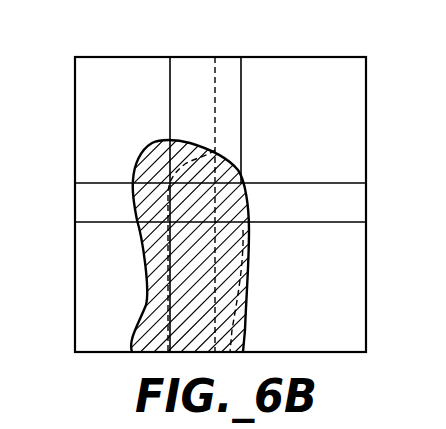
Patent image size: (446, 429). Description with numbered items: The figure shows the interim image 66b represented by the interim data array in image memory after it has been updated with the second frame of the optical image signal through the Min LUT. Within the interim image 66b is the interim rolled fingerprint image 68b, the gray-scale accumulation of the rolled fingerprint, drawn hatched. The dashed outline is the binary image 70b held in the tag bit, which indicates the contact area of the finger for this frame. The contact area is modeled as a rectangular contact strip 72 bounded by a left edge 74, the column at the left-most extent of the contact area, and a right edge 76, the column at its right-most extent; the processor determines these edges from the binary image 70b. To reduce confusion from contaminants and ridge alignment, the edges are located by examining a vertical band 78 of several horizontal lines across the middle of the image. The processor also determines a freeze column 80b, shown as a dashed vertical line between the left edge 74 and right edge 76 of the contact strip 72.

The interim image 66b is at (323, 70).
The contact strip 72 is at (181, 185).
The left edge 74 is at (168, 107).
The right edge 76 is at (243, 90).
The vertical band 78 is at (342, 205).
The freeze column 80b is at (215, 80).
The interim rolled fingerprint image 68b is at (143, 265).
The binary image 70b is at (167, 303).